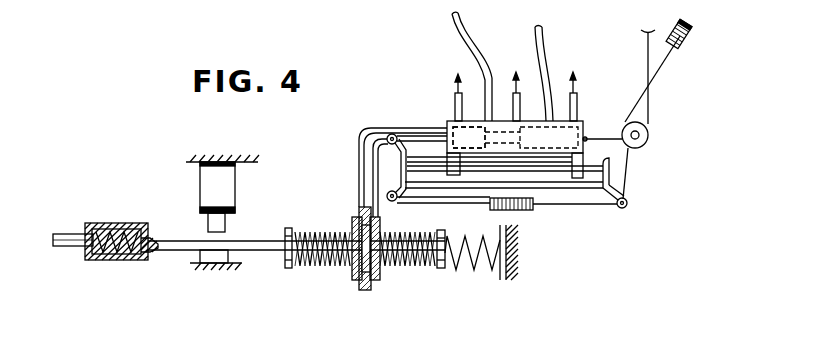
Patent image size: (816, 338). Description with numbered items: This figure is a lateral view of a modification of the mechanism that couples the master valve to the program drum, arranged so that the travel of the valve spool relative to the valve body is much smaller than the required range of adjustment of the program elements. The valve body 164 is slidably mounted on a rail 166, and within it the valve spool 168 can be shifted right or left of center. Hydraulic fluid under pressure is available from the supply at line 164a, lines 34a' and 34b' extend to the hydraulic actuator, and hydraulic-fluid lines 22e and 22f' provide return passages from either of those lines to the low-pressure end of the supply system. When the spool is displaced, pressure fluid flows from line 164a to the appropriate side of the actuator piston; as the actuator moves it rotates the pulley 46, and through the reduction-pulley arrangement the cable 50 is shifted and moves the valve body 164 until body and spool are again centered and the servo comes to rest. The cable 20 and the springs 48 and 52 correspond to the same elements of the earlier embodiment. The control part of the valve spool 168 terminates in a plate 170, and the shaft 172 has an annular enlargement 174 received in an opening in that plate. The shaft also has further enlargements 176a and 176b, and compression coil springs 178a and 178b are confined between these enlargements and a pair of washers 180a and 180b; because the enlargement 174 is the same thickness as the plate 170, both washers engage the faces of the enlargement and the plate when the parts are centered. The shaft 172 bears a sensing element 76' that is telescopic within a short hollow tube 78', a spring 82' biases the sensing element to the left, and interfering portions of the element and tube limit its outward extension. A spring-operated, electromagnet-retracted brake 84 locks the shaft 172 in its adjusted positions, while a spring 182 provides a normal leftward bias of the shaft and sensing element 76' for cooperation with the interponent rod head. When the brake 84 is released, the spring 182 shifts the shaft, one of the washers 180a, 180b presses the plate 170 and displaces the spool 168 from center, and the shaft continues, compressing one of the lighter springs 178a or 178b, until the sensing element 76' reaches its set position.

The sensing element 76' is at (64, 226).
The short hollow tube 78' is at (116, 226).
The spring 82' is at (124, 265).
The shaft 172 is at (172, 251).
The brake 84 is at (200, 184).
The shaft enlargement 176a is at (288, 230).
The compression coil spring 178a is at (313, 262).
The washer 180a is at (356, 282).
The washer 180b is at (379, 282).
The annular enlargement 174 is at (362, 236).
The plate 170 is at (366, 208).
The compression coil spring 178b is at (415, 250).
The shaft enlargement 176b is at (442, 270).
The spring 182 is at (474, 246).
The valve body 164 is at (443, 114).
The valve spool 168 is at (447, 127).
The hydraulic-fluid line 22e is at (455, 98).
The supply line 164a is at (512, 96).
The hydraulic-fluid line 22f' is at (591, 91).
The line 34a' is at (446, 66).
The line 34b' is at (561, 67).
The rail 166 is at (562, 170).
The spring 52 is at (526, 210).
The cable 50 is at (601, 139).
The pulley 46 is at (648, 142).
The cable 20 is at (648, 98).
The spring 48 is at (686, 40).